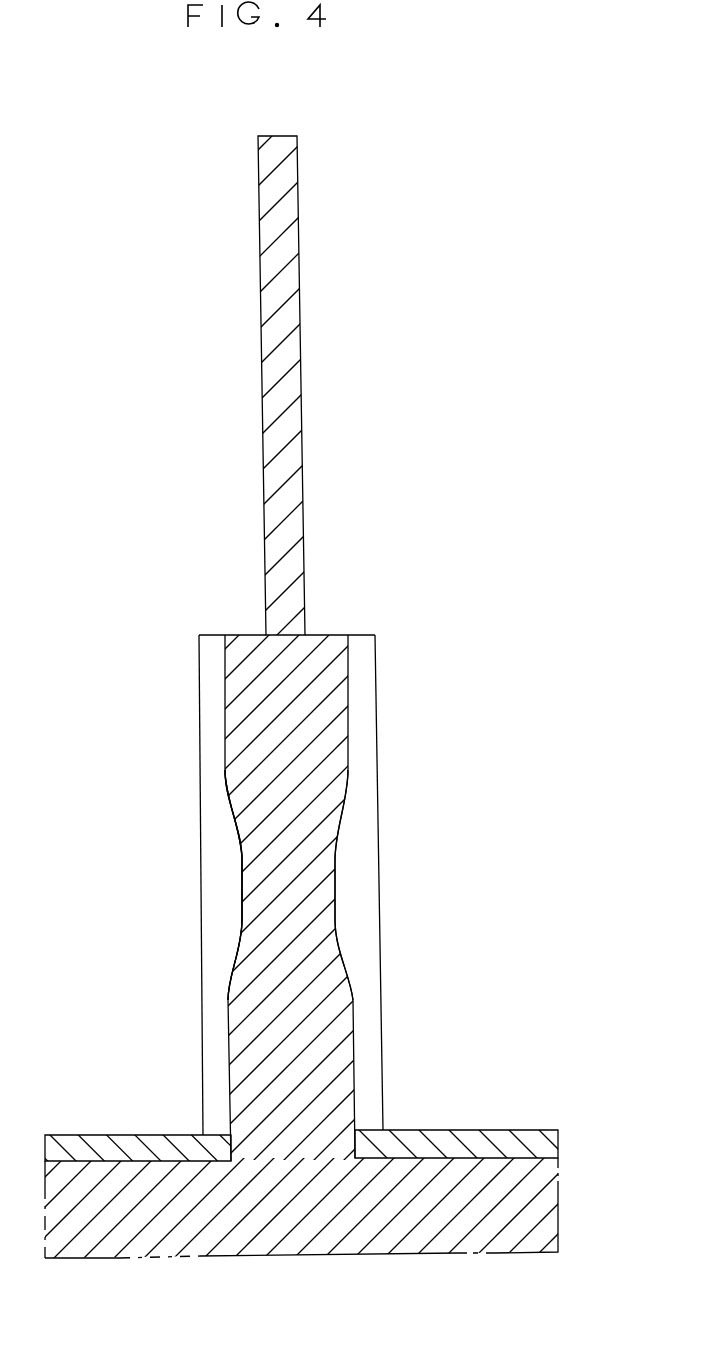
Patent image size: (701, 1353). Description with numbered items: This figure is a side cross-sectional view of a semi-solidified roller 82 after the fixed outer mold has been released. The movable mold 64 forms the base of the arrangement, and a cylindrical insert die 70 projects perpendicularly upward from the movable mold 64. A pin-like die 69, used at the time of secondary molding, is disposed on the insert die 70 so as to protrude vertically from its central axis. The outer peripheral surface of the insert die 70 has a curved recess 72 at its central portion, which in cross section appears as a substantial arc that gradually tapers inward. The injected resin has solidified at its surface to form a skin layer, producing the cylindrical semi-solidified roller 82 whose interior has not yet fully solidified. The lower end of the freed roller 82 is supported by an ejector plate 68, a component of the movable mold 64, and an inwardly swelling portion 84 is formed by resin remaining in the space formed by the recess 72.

The movable mold 64 is at (540, 1205).
The ejector plate 68 is at (545, 1145).
The pin-like die 69 is at (277, 150).
The insert die 70 is at (242, 1073).
The curved recess 72 is at (243, 883).
The semi-solidified roller 82 is at (210, 737).
The inwardly swelling portion 84 is at (227, 860).